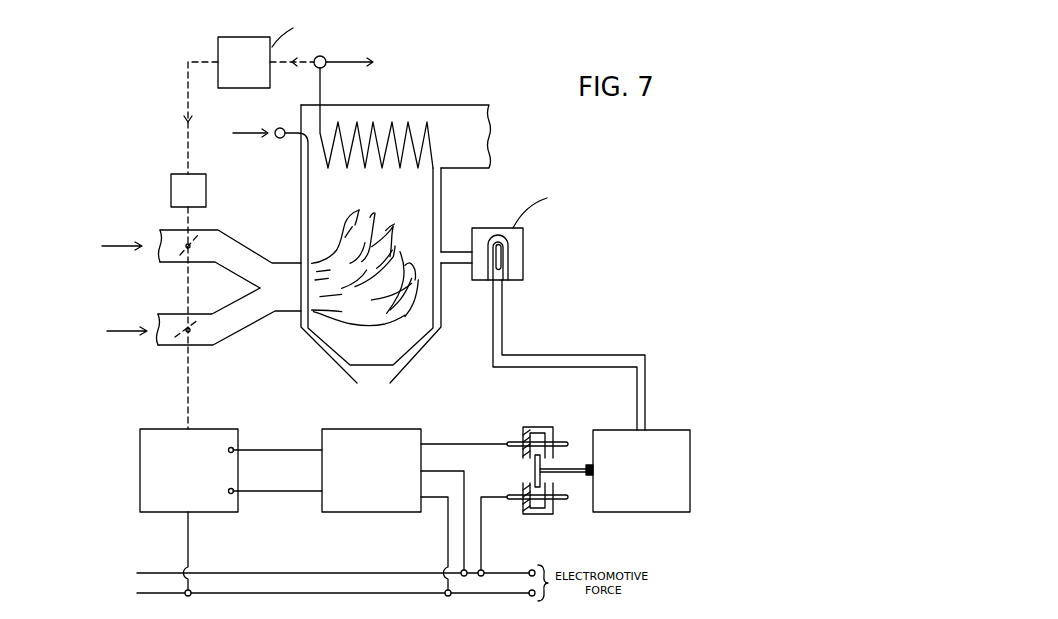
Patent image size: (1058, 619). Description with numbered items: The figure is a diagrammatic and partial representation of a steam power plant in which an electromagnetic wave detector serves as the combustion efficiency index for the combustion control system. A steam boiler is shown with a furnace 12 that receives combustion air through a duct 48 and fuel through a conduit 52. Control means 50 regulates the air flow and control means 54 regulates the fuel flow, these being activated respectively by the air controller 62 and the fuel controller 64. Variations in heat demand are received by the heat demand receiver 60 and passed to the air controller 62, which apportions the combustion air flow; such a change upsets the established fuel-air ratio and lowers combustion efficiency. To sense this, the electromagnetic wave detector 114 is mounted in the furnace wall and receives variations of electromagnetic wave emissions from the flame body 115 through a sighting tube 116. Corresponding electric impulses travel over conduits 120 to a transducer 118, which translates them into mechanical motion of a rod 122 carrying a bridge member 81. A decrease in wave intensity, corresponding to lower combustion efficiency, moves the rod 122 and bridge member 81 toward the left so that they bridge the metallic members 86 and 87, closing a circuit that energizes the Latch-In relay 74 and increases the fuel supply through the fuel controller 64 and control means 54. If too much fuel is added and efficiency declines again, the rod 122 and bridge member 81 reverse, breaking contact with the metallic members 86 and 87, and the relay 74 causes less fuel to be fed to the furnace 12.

The furnace 12 is at (380, 200).
The duct 48 is at (250, 254).
The control means 50 is at (172, 229).
The conduit 52 is at (247, 322).
The control means 54 is at (173, 338).
The heat demand receiver 60 is at (316, 87).
The air controller 62 is at (178, 173).
The fuel controller 64 is at (147, 467).
The Latch-In relay 74 is at (398, 508).
The bridge member 81 is at (534, 463).
The metallic member 86 is at (523, 506).
The metallic member 87 is at (523, 433).
The electromagnetic wave detector 114 is at (525, 257).
The flame body 115 is at (371, 267).
The sighting tube 116 is at (453, 250).
The transducer 118 is at (672, 438).
The conduits 120 is at (595, 353).
The rod 122 is at (575, 467).